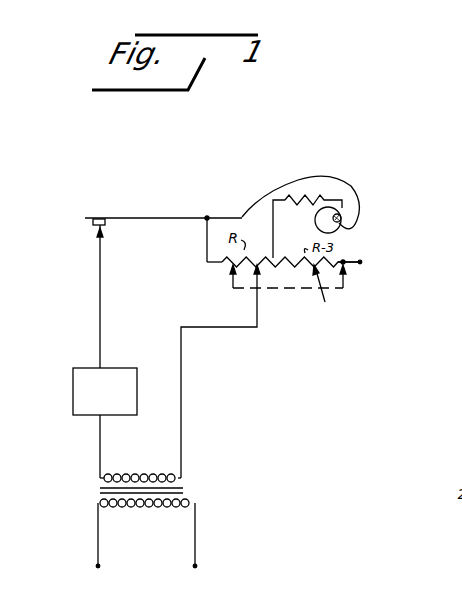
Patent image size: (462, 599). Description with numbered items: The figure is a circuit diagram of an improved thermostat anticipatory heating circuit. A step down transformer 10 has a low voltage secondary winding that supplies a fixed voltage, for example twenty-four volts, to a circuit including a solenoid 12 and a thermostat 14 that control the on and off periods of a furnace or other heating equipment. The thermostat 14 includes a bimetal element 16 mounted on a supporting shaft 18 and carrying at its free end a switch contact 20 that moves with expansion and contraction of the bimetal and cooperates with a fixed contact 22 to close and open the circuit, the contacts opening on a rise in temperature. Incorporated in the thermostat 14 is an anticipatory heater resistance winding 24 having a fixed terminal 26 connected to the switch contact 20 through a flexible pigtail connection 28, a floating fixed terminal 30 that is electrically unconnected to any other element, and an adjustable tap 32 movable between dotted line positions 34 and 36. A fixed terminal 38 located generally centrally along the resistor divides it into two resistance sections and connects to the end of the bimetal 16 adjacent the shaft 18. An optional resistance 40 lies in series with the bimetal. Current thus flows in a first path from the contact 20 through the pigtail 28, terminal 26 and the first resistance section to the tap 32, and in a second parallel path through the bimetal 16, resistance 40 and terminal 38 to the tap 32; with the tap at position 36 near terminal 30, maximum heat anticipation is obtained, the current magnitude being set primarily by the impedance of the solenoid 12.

The step down transformer 10 is at (193, 487).
The solenoid 12 is at (73, 381).
The thermostat 14 is at (352, 186).
The bimetal element 16 is at (357, 213).
The supporting shaft 18 is at (340, 221).
The switch contact 20 is at (97, 217).
The fixed contact 22 is at (103, 234).
The anticipatory heater resistance winding 24 is at (329, 291).
The fixed terminal 26 is at (207, 262).
The flexible pigtail connection 28 is at (207, 238).
The floating fixed terminal 30 is at (362, 261).
The adjustable tap 32 is at (260, 282).
The dotted line position 34 is at (233, 283).
The dotted line position 36 is at (345, 283).
The fixed terminal 38 is at (287, 229).
The resistance 40 is at (312, 211).